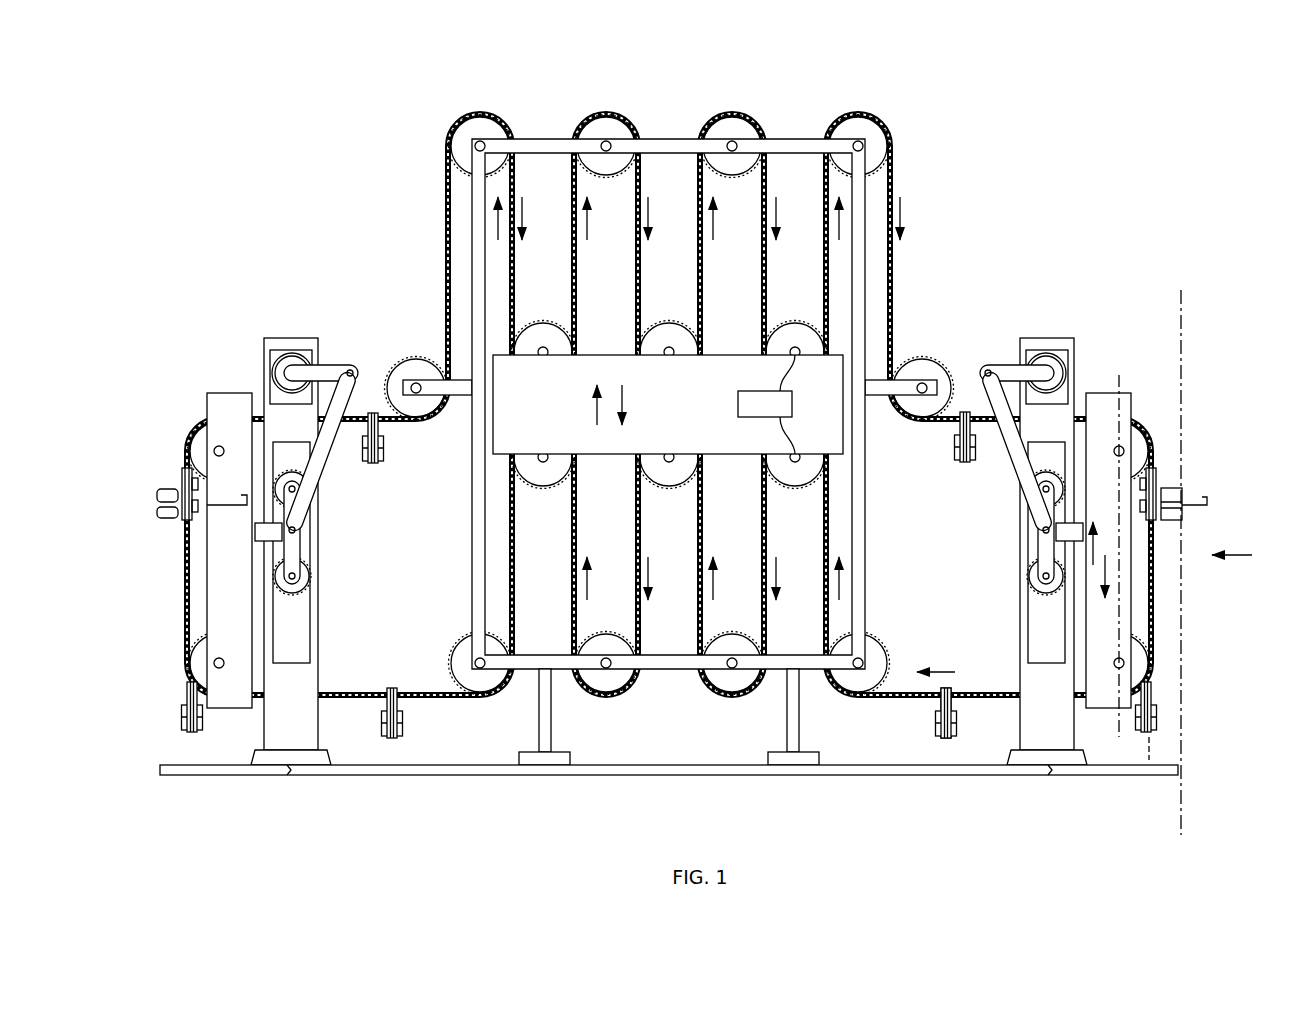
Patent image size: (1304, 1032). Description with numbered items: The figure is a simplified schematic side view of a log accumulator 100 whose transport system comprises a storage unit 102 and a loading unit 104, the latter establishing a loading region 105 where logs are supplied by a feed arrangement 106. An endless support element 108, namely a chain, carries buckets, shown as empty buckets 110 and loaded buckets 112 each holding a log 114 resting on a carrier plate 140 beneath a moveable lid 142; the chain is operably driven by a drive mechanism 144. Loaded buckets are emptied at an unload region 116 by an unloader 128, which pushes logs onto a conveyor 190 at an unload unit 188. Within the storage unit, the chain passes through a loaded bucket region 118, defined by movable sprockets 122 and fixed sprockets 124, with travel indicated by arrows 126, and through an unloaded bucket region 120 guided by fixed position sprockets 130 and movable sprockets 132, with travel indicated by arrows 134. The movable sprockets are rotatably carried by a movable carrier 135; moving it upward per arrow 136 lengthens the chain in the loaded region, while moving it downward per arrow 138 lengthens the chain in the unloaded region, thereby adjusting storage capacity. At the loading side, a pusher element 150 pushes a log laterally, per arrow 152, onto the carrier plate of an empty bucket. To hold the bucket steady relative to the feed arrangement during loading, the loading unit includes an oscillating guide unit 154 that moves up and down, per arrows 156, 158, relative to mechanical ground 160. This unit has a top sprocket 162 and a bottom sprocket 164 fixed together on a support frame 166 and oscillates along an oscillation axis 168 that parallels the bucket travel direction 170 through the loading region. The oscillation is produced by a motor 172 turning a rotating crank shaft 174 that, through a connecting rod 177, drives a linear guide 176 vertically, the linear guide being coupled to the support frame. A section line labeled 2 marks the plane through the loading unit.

The section line 2- 2 is at (1178, 300).
The log accumulator 100 is at (709, 388).
The storage unit 102 is at (435, 128).
The loading unit 104 is at (1018, 510).
The loading region 105 is at (1109, 556).
The feed arrangement 106 is at (1074, 595).
The endless support element 108 is at (893, 160).
The empty buckets 110 is at (957, 435).
The loaded buckets 112 is at (185, 480).
The log 114 is at (1172, 497).
The unload region 116 is at (149, 457).
The loaded bucket region 118 is at (672, 733).
The unloaded bucket region 120 is at (652, 108).
The movable sprockets 122 is at (543, 488).
The fixed sprockets 124 is at (606, 692).
The arrows 126 is at (590, 570).
The unloader 128 is at (228, 503).
The fixed position sprockets 130 is at (735, 119).
The movable sprockets 132 is at (668, 333).
The arrows 134 is at (525, 214).
The movable carrier 135 is at (730, 353).
The arrow 136 is at (596, 415).
The arrow 138 is at (625, 400).
The carrier plate 140 is at (1143, 522).
The moveable lid 142 is at (938, 725).
The drive mechanism 144 is at (742, 417).
The pusher element 150 is at (1190, 512).
The arrow 152 is at (1252, 555).
The oscillating guide unit 154 is at (1097, 715).
The arrow 156 is at (1092, 547).
The arrow 158 is at (1102, 572).
The mechanical ground 160 is at (968, 775).
The top sprocket 162 is at (1140, 422).
The bottom sprocket 164 is at (1150, 666).
The support frame 166 is at (1087, 678).
The oscillation axis 168 is at (1118, 408).
The bucket travel direction 170 is at (1152, 745).
The motor 172 is at (1046, 352).
The rotating crank shaft 174 is at (1005, 370).
The linear guide 176 is at (1000, 530).
The connecting rod 177 is at (992, 386).
The unload unit 188 is at (236, 338).
The conveyor 190 is at (162, 508).